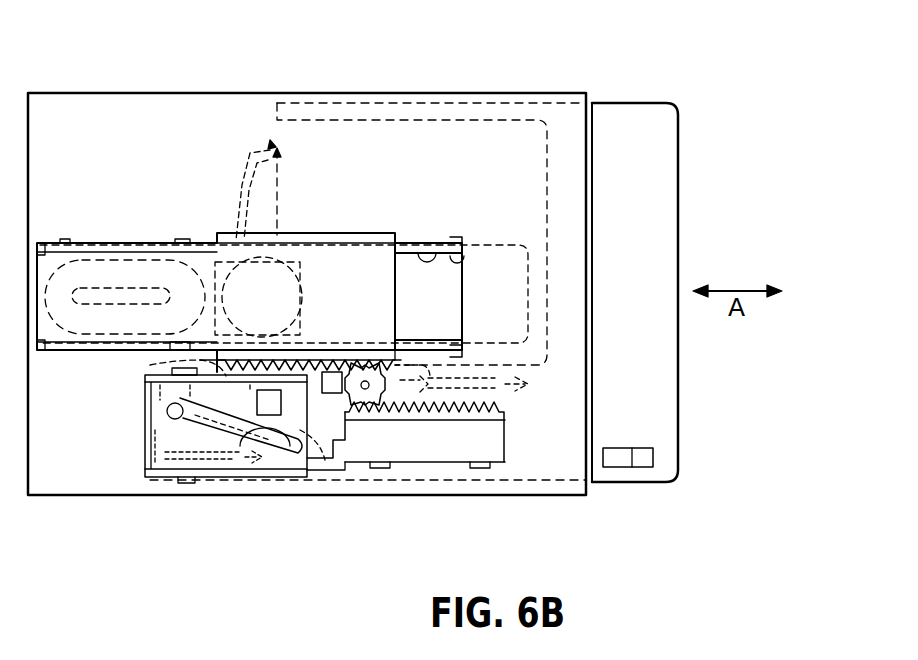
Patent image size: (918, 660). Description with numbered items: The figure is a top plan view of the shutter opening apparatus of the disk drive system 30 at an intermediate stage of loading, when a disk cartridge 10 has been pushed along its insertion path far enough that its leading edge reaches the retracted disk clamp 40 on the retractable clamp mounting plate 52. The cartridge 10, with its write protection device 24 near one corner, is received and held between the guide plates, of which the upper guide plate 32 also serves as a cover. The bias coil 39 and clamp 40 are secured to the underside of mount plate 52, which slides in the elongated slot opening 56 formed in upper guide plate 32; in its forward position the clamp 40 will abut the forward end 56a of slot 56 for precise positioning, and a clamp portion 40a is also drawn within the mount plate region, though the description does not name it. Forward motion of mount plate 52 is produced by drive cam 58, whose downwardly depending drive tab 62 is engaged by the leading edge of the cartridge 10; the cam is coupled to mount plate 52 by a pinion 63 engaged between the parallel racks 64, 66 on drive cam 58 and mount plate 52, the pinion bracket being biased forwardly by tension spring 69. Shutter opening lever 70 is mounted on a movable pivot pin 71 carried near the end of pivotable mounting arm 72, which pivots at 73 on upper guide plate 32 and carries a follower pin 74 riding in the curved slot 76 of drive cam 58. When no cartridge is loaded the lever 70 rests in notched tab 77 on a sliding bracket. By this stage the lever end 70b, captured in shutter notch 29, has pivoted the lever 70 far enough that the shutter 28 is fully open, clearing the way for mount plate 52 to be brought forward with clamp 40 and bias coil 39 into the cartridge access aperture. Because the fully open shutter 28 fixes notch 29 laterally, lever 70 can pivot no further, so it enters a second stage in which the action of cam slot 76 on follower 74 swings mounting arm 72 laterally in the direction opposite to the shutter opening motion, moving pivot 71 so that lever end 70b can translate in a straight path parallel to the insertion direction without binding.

The disk cartridge 10 is at (678, 197).
The write protection device 24 is at (620, 467).
The shutter 28 is at (547, 170).
The shutter notch 29 is at (285, 166).
The disk drive system 30 is at (197, 93).
The upper guide plate 32 is at (140, 93).
The bias coil 39 is at (66, 243).
The disk clamp 40 is at (232, 226).
The cartridge portion 40a is at (300, 275).
The retractable clamp mounting plate 52 is at (334, 233).
The elongated slot opening 56 is at (434, 252).
The forward end of slot 56a is at (457, 260).
The drive cam 58 is at (450, 465).
The drive tab 62 is at (283, 402).
The pinion 63 is at (375, 400).
The rack 64 is at (498, 402).
The rack 66 is at (362, 366).
The tension spring 69 is at (470, 375).
The shutter opening lever 70 is at (242, 190).
The lever end 70b is at (270, 145).
The pivot pin 71 is at (142, 456).
The pivotable mounting arm 72 is at (145, 438).
The arm pivot 73 is at (322, 470).
The follower pin 74 is at (168, 410).
The curved slot 76 is at (268, 448).
The notched tab 77 is at (150, 365).